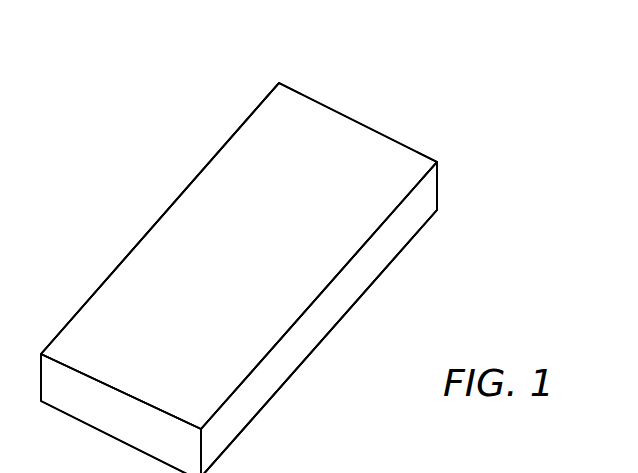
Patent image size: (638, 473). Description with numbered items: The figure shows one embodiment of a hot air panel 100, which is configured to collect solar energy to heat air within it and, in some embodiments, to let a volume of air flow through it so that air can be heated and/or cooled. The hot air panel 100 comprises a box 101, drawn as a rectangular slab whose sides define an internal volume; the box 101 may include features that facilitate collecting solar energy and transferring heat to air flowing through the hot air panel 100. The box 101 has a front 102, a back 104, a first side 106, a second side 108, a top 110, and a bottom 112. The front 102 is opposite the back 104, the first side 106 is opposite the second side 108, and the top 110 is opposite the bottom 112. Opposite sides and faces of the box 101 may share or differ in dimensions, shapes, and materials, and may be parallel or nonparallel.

The hot air panel 100 is at (455, 41).
The box 101 is at (277, 80).
The front 102 is at (357, 140).
The back 104 is at (322, 340).
The first side 106 is at (204, 163).
The second side 108 is at (368, 262).
The top 110 is at (416, 146).
The bottom 112 is at (133, 421).